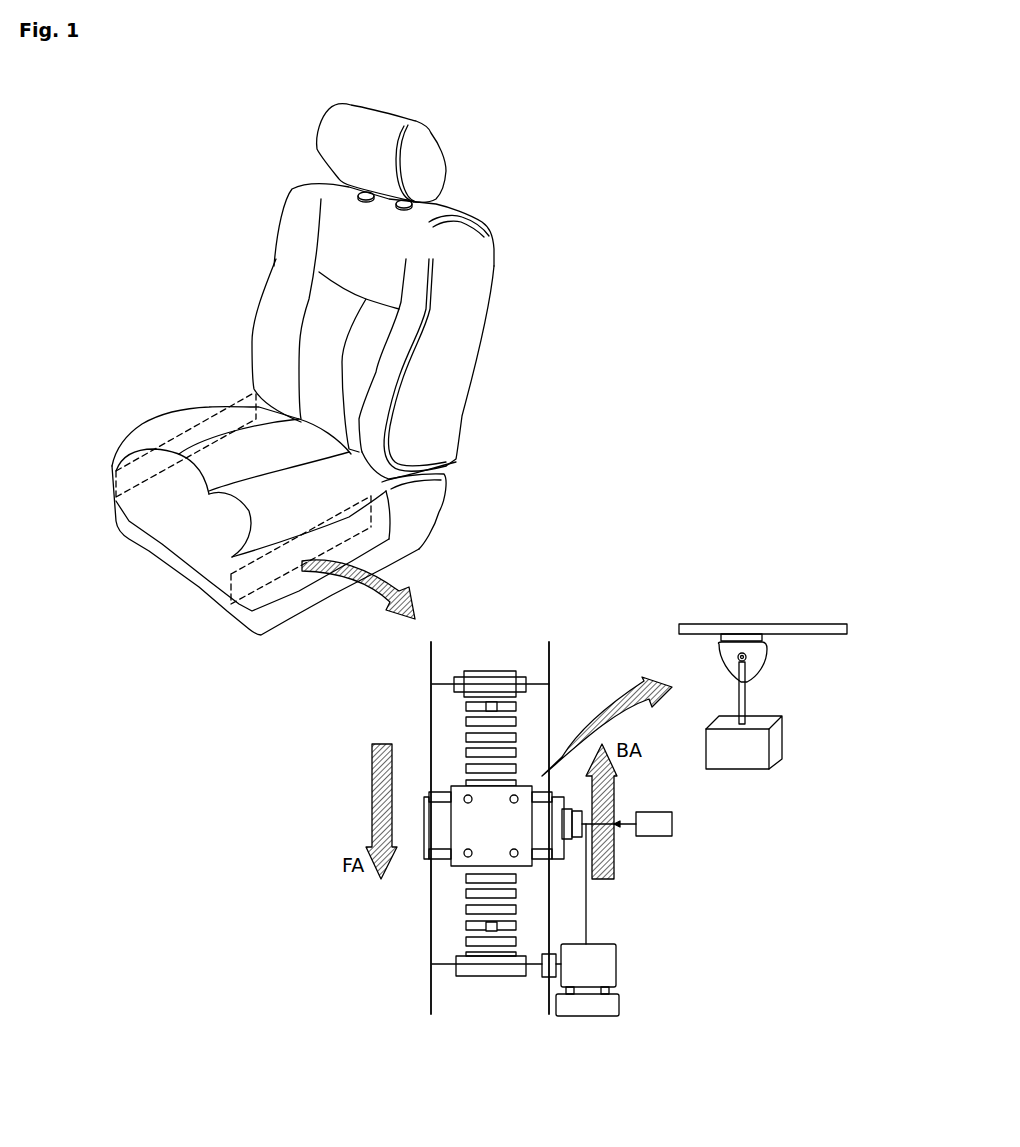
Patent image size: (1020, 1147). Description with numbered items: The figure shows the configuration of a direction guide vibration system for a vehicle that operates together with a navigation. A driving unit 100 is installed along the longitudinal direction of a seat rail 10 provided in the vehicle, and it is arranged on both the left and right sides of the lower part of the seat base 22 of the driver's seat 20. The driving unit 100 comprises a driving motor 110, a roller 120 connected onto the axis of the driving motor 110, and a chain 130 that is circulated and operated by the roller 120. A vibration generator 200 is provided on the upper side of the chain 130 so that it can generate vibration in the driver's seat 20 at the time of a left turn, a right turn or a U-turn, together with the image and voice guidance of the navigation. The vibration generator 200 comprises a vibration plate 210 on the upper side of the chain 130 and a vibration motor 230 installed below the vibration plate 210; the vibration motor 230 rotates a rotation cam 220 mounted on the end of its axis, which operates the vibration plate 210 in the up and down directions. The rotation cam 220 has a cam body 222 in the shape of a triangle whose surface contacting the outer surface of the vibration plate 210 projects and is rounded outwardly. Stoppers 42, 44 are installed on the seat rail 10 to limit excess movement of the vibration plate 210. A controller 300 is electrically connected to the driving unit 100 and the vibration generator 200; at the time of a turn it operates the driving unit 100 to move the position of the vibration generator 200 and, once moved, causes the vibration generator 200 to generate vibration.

The seat rail 10 is at (432, 982).
The driver's seat 20 is at (479, 354).
The seat base 22 is at (318, 486).
The stopper 42 is at (492, 702).
The stopper 44 is at (467, 927).
The driving unit 100 is at (115, 483).
The driving motor 110 is at (588, 982).
The roller 120 is at (512, 977).
The chain 130 is at (490, 952).
The vibration generator 200 is at (450, 782).
The vibration plate 210 is at (763, 638).
The rotation cam 220 is at (760, 673).
The cam body 222 is at (764, 660).
The vibration motor 230 is at (773, 741).
The controller 300 is at (655, 813).